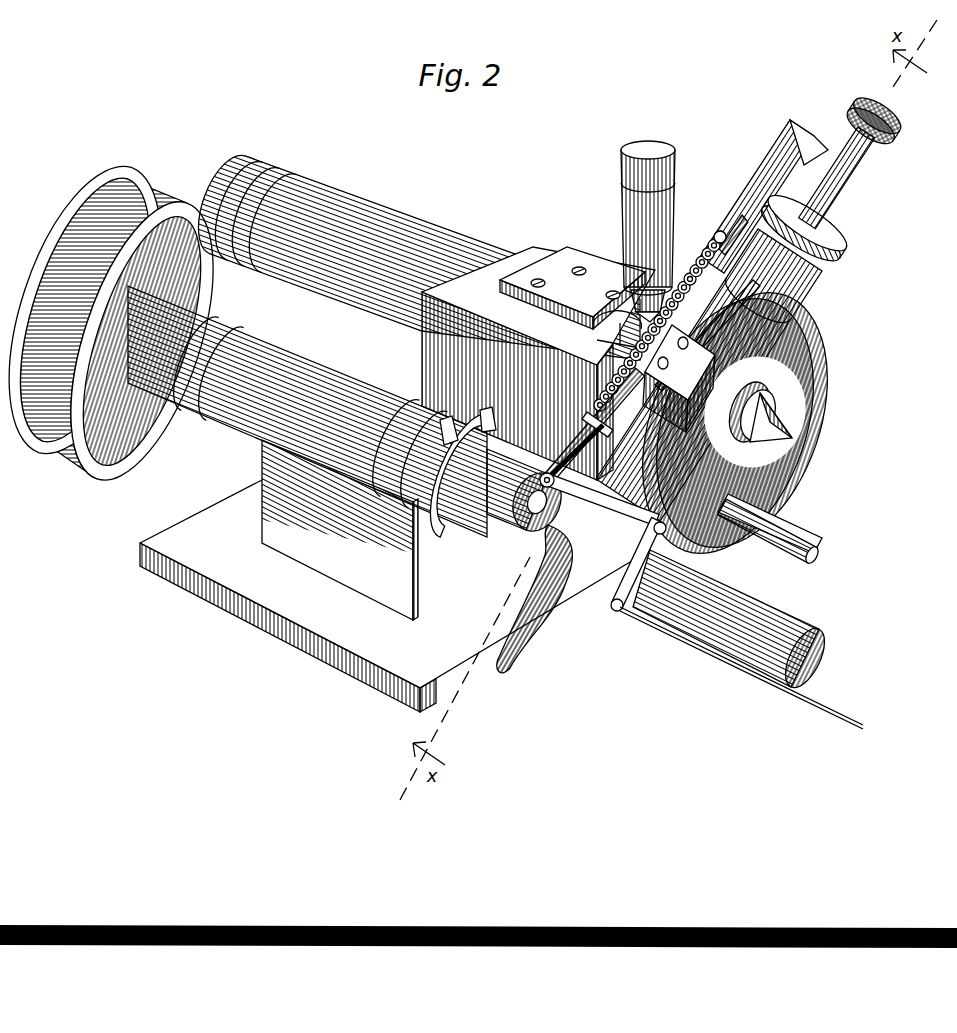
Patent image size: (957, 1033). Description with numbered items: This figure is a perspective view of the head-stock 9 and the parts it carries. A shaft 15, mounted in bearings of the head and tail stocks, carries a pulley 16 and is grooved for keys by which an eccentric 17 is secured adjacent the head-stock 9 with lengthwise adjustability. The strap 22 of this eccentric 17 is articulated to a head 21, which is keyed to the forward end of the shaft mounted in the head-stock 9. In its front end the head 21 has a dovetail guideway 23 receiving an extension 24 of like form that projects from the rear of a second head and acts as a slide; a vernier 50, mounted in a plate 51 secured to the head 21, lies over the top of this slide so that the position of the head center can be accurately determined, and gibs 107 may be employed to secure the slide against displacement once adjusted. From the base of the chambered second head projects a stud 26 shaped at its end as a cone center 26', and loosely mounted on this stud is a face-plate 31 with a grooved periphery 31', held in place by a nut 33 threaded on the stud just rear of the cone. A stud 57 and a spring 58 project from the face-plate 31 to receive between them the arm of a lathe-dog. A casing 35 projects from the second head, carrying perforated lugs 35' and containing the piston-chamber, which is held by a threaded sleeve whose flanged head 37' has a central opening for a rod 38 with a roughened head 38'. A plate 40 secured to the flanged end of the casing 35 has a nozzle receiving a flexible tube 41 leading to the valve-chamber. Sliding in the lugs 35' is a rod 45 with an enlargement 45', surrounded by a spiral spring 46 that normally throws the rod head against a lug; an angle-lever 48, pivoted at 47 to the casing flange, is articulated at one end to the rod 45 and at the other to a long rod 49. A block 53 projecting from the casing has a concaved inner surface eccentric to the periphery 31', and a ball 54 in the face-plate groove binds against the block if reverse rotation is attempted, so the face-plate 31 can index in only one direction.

The head-stock 9 is at (340, 530).
The shaft 15 is at (815, 650).
The pulley 16 is at (38, 428).
The eccentric 17 is at (349, 412).
The head 21 is at (538, 363).
The strap 22 is at (440, 450).
The guideway 23 is at (612, 330).
The extension 24 is at (633, 298).
The stud or short shaft 26 is at (768, 414).
The cone center 26' is at (801, 417).
The face-plate 31 is at (735, 423).
The grooved periphery 31' is at (707, 335).
The nut 33 is at (754, 393).
The casing 35 is at (728, 375).
The perforated lugs 35' is at (726, 221).
The flanged head 37' is at (821, 228).
The rod 38 is at (847, 178).
The roughened head 38' is at (888, 121).
The plate 40 is at (525, 563).
The flexible tube 41 is at (528, 652).
The rod 45 is at (702, 225).
The enlargement 45' is at (757, 196).
The spiral spring 46 is at (692, 290).
The pivot 47 is at (662, 542).
The angle-lever 48 is at (612, 590).
The long rod 49 is at (700, 660).
The vernier 50 is at (625, 172).
The plate 51 is at (566, 262).
The block 53 is at (695, 335).
The ball 54 is at (630, 432).
The stud 57 is at (783, 550).
The spring 58 is at (812, 524).
The gibs 107 is at (560, 343).